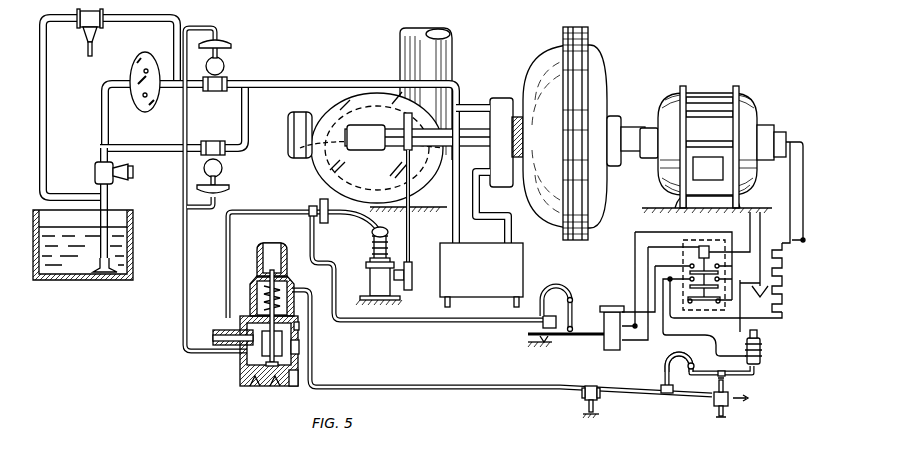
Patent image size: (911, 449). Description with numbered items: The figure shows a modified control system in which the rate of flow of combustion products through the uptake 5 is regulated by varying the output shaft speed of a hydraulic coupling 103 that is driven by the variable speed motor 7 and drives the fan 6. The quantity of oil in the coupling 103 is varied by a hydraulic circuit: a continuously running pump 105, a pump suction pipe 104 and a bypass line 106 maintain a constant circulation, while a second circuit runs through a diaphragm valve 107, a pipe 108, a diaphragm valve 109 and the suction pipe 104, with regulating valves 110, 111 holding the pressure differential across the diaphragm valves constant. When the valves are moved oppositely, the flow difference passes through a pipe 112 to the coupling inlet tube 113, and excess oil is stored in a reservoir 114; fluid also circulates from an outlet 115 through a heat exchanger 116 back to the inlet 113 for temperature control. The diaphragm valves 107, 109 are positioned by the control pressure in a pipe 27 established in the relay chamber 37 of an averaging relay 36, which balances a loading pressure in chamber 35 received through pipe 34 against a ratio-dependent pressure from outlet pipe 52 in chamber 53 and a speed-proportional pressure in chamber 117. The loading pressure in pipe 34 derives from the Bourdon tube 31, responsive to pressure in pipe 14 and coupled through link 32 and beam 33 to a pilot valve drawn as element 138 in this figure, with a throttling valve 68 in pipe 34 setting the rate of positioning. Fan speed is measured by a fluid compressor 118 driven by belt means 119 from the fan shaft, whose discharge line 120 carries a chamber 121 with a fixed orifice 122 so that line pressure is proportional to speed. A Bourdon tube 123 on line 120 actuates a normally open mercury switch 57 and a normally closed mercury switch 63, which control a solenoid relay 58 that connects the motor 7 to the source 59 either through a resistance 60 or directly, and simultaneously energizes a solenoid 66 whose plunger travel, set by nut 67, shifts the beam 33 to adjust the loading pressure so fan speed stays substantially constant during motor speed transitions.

The uptake 5 is at (306, 165).
The fan 6 is at (424, 186).
The multi-speed motor 7 is at (751, 104).
The pipe 14 is at (661, 388).
The pipe 27 is at (183, 338).
The Bourdon tube 31 is at (681, 350).
The link 32 is at (691, 370).
The beam 33 is at (746, 375).
The pipe 34 is at (545, 396).
The chamber 35 is at (251, 306).
The averaging relay 36 is at (292, 285).
The relay chamber 37 is at (295, 373).
The outlet pipe 52 is at (218, 346).
The chamber 53 is at (300, 341).
The mercury switch 57 is at (603, 318).
The solenoid relay 58 is at (695, 275).
The source 59 is at (761, 302).
The resistance 60 is at (784, 250).
The mercury switch 63 is at (605, 353).
The solenoid 66 is at (762, 350).
The nut 67 is at (762, 333).
The throttling valve 68 is at (599, 406).
The hydraulic coupling 103 is at (600, 58).
The pump suction pipe 104 is at (100, 127).
The pump 105 is at (150, 55).
The bypass line 106 is at (49, 85).
The diaphragm valve 107 is at (226, 65).
The pipe 108 is at (250, 118).
The diaphragm valve 109 is at (220, 172).
The regulating valve 110 is at (89, 40).
The regulating valve 111 is at (122, 183).
The pipe 112 is at (300, 83).
The coupling inlet tube 113 is at (474, 102).
The reservoir 114 is at (133, 238).
The outlet 115 is at (480, 199).
The heat exchanger 116 is at (527, 258).
The chamber 117 is at (300, 327).
The fluid compressor 118 is at (370, 265).
The belt means 119 is at (412, 214).
The discharge line 120 is at (362, 215).
The chamber 121 is at (314, 220).
The fixed orifice 122 is at (322, 200).
The Bourdon tube 123 is at (565, 286).
The valve 138 is at (727, 410).